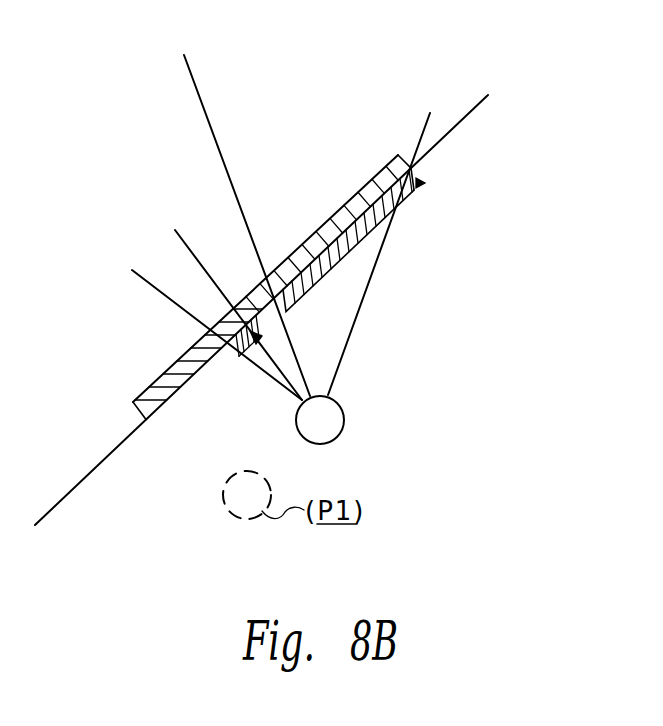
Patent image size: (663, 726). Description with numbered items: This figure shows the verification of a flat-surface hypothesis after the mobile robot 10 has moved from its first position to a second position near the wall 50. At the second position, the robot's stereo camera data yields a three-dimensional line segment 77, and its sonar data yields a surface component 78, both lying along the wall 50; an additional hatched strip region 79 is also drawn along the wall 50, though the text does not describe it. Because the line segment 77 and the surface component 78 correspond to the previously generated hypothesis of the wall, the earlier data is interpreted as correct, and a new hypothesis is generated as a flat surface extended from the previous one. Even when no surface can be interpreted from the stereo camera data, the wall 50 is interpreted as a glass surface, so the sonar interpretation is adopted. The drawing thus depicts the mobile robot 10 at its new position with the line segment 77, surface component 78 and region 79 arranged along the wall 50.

The mobile robot 10 is at (344, 412).
The wall 50 is at (91, 516).
The three-dimensional line segment 77 is at (418, 184).
The surface component 78 is at (238, 348).
The illuminated strip region 79 is at (332, 212).